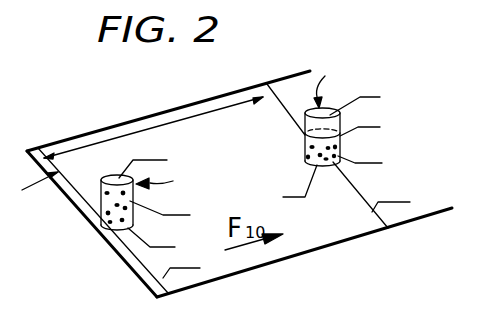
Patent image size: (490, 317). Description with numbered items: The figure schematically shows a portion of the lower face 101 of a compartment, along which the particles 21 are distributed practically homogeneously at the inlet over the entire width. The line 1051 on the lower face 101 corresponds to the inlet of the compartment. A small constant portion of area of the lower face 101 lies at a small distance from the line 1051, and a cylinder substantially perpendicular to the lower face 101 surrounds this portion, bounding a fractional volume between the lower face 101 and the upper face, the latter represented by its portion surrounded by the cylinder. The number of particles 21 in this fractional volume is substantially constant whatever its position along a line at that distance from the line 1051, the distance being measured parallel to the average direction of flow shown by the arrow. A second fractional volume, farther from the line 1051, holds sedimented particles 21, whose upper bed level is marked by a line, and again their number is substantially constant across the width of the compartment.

The particles 21 is at (303, 148).
The lower face 101 is at (280, 261).
The line 1051 is at (117, 251).